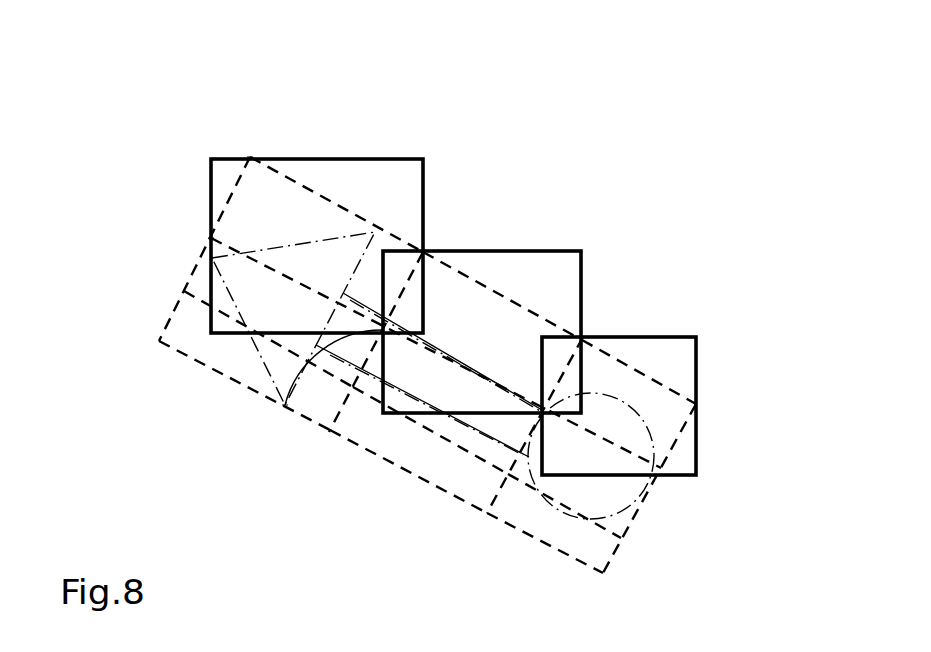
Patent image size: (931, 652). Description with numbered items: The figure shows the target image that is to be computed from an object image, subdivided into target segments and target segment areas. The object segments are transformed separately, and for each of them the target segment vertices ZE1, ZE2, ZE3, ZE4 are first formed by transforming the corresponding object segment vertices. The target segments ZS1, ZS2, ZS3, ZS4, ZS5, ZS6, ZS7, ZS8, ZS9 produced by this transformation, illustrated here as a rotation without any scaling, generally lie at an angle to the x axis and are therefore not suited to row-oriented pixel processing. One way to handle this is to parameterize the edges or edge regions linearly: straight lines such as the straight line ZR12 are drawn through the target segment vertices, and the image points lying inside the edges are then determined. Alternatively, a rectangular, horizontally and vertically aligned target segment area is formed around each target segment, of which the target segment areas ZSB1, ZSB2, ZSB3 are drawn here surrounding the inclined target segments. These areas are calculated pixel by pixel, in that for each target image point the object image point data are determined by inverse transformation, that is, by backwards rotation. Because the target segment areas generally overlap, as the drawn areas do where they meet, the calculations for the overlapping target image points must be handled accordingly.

The straight line ZR12 is at (309, 190).
The target segment ZS1 is at (266, 185).
The target segment ZS2 is at (530, 333).
The target segment ZS3 is at (698, 405).
The target segment ZS4 is at (185, 292).
The target segment ZS5 is at (365, 397).
The target segment ZS6 is at (632, 522).
The target segment ZS7 is at (212, 372).
The target segment ZS8 is at (452, 497).
The target segment ZS9 is at (550, 545).
The target segment vertex ZE1 is at (247, 158).
The target segment vertex ZE2 is at (424, 250).
The target segment vertex ZE3 is at (211, 238).
The target segment vertex ZE4 is at (285, 405).
The target segment area ZSB1 is at (369, 173).
The target segment area ZSB2 is at (507, 264).
The target segment area ZSB3 is at (688, 352).